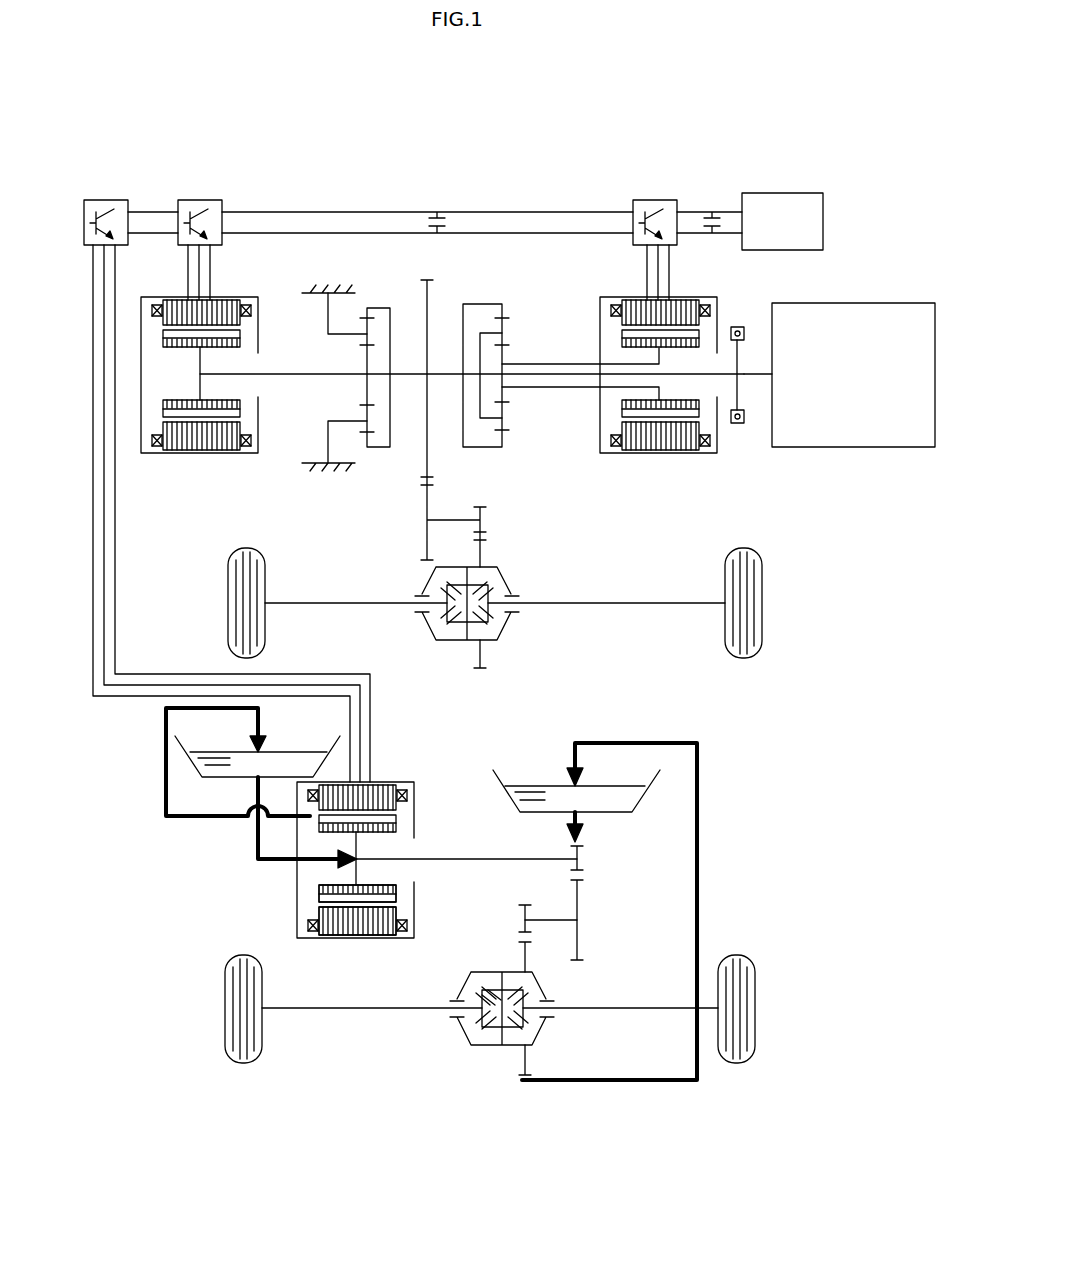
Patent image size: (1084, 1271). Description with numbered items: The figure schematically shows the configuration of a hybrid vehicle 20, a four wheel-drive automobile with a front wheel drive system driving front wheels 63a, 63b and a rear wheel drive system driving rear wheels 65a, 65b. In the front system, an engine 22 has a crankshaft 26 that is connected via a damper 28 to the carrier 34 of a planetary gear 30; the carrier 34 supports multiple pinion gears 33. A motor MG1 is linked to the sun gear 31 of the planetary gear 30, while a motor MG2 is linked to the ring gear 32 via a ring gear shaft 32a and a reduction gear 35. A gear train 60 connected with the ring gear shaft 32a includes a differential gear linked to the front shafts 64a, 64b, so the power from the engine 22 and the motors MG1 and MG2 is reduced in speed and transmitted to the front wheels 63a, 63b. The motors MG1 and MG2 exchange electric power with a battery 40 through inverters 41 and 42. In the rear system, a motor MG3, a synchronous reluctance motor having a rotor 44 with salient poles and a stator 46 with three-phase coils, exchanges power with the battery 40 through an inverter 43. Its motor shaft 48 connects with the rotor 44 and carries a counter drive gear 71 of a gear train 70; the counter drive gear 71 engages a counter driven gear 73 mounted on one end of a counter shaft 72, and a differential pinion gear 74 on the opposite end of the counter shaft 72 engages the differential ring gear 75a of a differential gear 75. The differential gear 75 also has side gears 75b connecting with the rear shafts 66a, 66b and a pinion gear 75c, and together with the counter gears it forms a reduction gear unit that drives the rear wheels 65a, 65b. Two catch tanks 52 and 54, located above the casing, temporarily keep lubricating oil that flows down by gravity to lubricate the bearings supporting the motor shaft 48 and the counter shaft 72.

The hybrid vehicle 20 is at (687, 124).
The engine 22 is at (853, 304).
The crankshaft 26 is at (753, 378).
The damper 28 is at (740, 423).
The planetary gear 30 is at (561, 359).
The sun gear 31 is at (505, 390).
The ring gear 32 is at (505, 440).
The ring gear shaft 32a is at (413, 374).
The pinion gears 33 is at (505, 413).
The carrier 34 is at (481, 340).
The reduction gear 35 is at (365, 288).
The battery 40 is at (782, 250).
The inverter 41 is at (655, 200).
The inverter 42 is at (199, 200).
The inverter 43 is at (104, 200).
The rotor 44 is at (320, 888).
The stator 46 is at (318, 912).
The motor shaft 48 is at (450, 859).
The catch tank 52 is at (640, 800).
The catch tank 54 is at (232, 777).
The gear train 60 is at (506, 541).
The front wheel 63a is at (228, 636).
The front wheel 63b is at (762, 636).
The front shaft 64a is at (355, 603).
The front shaft 64b is at (598, 603).
The rear wheel 65a is at (225, 1036).
The rear wheel 65b is at (757, 1042).
The rear shaft 66a is at (330, 1010).
The rear shaft 66b is at (603, 1010).
The gear train 70 is at (567, 902).
The counter drive gear 71 is at (580, 857).
The counter shaft 72 is at (555, 919).
The counter driven gear 73 is at (582, 944).
The differential pinion gear 74 is at (522, 912).
The differential gear 75 is at (455, 984).
The differential ring gear 75a is at (523, 952).
The side gears 75b is at (478, 1016).
The pinion gear 75c is at (497, 1045).
The motor MG1 is at (670, 453).
The motor MG2 is at (190, 453).
The motor MG3 is at (357, 938).